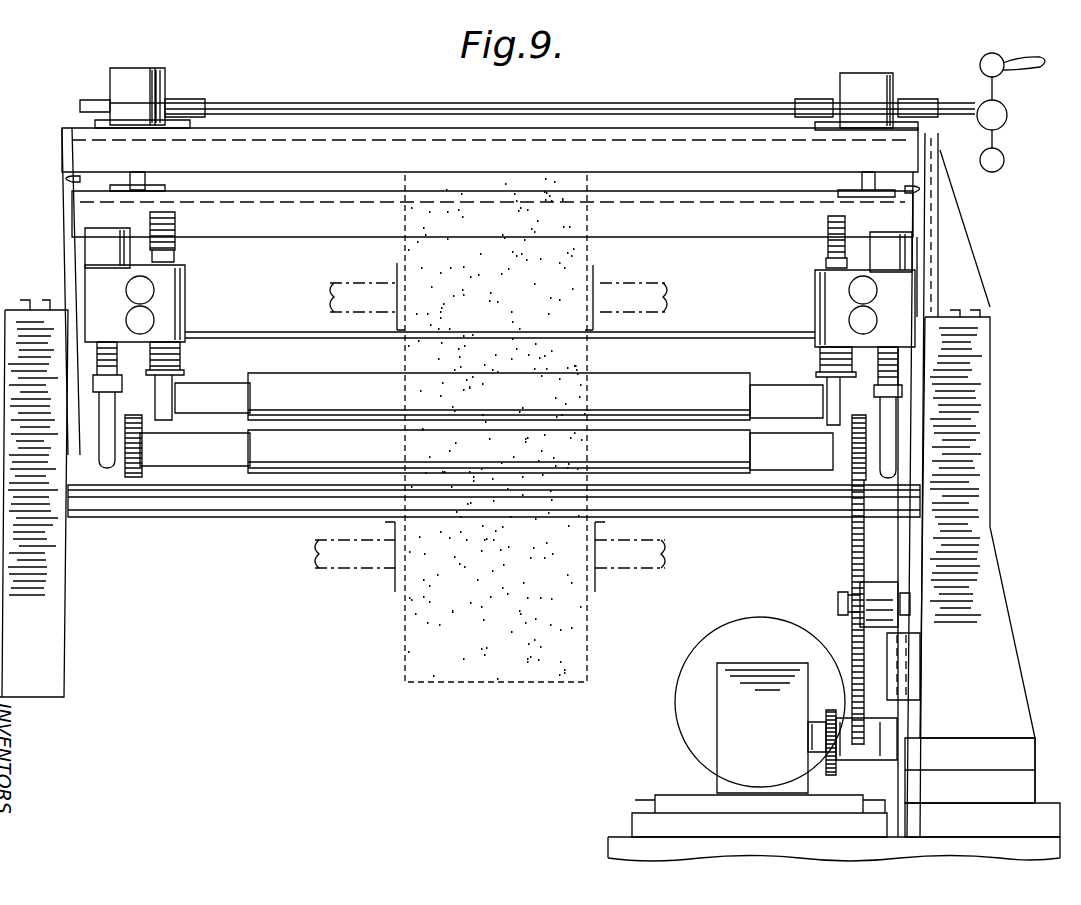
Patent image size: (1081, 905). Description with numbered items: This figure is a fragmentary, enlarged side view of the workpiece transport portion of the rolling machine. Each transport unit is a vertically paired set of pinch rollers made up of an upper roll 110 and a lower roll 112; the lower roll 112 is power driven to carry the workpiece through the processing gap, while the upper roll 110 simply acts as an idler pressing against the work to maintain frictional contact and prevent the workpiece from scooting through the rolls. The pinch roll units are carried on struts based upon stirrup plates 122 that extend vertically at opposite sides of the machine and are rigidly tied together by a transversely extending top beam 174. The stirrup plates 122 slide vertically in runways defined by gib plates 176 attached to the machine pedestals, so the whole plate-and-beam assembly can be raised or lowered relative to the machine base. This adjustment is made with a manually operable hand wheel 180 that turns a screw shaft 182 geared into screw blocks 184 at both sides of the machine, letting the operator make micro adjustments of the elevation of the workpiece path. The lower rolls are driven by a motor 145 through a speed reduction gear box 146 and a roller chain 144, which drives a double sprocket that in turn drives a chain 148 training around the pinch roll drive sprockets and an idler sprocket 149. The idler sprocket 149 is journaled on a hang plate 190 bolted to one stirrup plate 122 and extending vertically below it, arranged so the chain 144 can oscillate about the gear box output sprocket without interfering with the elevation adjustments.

The upper roll 110 is at (338, 386).
The lower roll 112 is at (355, 449).
The stirrup plate 122 is at (75, 214).
The roller chain 144 is at (836, 772).
The motor 145 is at (773, 646).
The speed reduction gear box 146 is at (773, 738).
The chain 148 is at (852, 546).
The idler sprocket 149 is at (866, 592).
The top beam 174 is at (692, 230).
The gib plates 176 is at (72, 179).
The hand wheel 180 is at (1015, 60).
The screw shaft 182 is at (680, 110).
The screw blocks 184 is at (112, 78).
The hang plate 190 is at (900, 557).